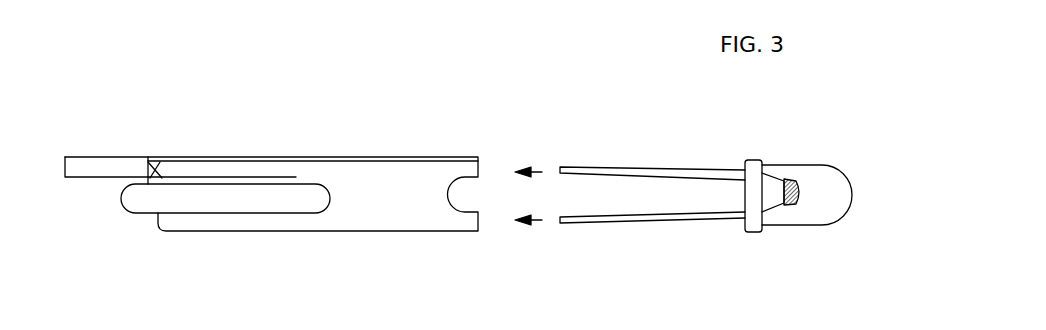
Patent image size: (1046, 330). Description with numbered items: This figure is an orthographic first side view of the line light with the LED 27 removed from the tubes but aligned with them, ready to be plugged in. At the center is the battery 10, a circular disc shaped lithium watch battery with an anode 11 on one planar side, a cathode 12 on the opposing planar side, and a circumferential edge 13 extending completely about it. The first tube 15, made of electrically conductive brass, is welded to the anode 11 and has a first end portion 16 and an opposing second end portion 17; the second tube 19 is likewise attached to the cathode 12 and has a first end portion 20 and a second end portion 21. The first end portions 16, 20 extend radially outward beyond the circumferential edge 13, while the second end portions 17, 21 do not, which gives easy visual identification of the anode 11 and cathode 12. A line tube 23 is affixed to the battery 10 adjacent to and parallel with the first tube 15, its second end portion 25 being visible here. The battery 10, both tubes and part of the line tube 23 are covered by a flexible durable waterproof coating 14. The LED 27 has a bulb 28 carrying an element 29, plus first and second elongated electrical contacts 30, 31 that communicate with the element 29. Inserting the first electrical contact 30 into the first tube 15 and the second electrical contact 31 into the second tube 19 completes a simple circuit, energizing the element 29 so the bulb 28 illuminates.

The battery 10 is at (182, 164).
The anode 11 is at (270, 177).
The cathode 12 is at (192, 215).
The circumferential edge 13 is at (220, 200).
The flexible durable waterproof coating 14 is at (389, 201).
The first tube 15 is at (371, 145).
The first end portion 16 is at (478, 157).
The second end portion 17 is at (150, 160).
The second tube 19 is at (305, 245).
The first end portion 20 is at (478, 231).
The second end portion 21 is at (165, 220).
The line tube 23 is at (241, 145).
The second end portion 25 is at (70, 157).
The LED 27 is at (752, 145).
The bulb 28 is at (818, 173).
The element 29 is at (790, 214).
The first electrical contact 30 is at (582, 166).
The second electrical contact 31 is at (593, 223).